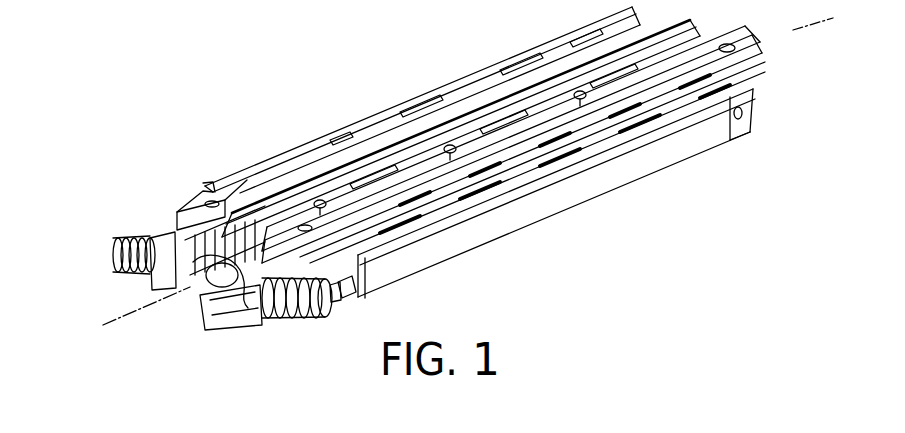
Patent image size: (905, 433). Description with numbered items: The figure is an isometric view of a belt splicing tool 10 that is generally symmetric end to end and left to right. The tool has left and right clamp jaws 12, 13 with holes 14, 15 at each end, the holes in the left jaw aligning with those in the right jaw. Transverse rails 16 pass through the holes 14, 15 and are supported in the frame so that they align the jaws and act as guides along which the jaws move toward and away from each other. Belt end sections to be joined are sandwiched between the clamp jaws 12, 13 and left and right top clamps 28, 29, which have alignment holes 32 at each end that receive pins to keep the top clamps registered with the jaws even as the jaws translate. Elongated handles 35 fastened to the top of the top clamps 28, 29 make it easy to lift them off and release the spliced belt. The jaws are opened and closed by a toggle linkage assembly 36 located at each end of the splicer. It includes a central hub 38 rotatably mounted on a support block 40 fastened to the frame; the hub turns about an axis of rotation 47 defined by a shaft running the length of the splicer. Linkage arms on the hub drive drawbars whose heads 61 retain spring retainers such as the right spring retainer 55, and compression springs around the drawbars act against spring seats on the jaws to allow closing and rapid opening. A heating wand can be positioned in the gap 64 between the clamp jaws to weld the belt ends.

The tool 10 is at (276, 58).
The left clamp jaw 12 is at (180, 232).
The right clamp jaw 13 is at (373, 240).
The holes 14 is at (338, 300).
The holes 15 is at (741, 118).
The transverse rails 16 is at (338, 291).
The left top clamp 28 is at (198, 205).
The right top clamp 29 is at (801, 29).
The alignment holes 32 is at (730, 40).
The elongated handles 35 is at (586, 30).
The toggle linkage assembly 36 is at (183, 313).
The central hub 38 is at (221, 305).
The support block 40 is at (247, 320).
The axis of rotation 47 is at (127, 313).
The right spring retainer 55 is at (303, 320).
The heads 61 is at (314, 315).
The gap 64 is at (296, 203).